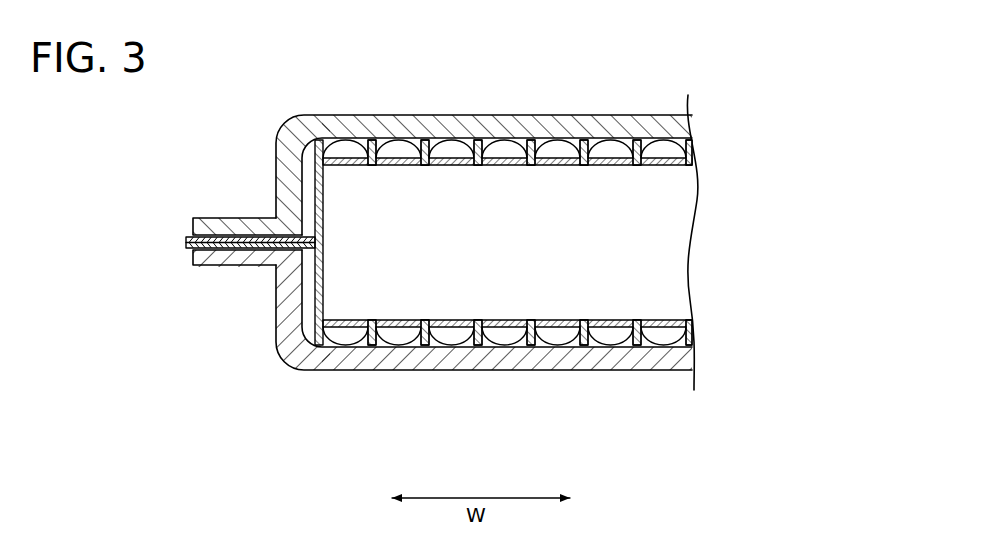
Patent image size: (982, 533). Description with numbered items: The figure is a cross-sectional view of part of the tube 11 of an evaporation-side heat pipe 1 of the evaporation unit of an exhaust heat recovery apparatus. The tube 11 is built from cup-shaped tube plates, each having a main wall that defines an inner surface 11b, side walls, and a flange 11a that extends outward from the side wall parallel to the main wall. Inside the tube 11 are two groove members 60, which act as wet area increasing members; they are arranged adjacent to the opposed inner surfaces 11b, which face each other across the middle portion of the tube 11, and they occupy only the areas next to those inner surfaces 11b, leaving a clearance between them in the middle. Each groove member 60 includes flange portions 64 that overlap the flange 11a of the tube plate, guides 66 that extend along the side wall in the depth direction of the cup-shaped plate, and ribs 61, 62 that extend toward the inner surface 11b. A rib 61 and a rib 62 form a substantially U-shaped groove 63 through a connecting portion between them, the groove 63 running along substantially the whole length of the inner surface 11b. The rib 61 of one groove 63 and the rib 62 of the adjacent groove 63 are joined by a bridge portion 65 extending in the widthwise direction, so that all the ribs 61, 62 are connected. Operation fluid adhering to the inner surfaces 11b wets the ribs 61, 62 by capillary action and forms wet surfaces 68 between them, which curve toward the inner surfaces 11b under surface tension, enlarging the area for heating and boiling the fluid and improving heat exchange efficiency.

The evaporation-side heat pipe 1 is at (587, 95).
The tube 11 is at (503, 115).
The flange 11a is at (213, 220).
The inner surface 11b is at (523, 127).
The groove member 60 is at (529, 247).
The rib 61 is at (373, 140).
The rib 62 is at (426, 140).
The groove 63 is at (400, 140).
The flange portion 64 is at (186, 238).
The bridge portion 65 is at (452, 168).
The guide 66 is at (320, 140).
The wet surface 68 is at (460, 143).